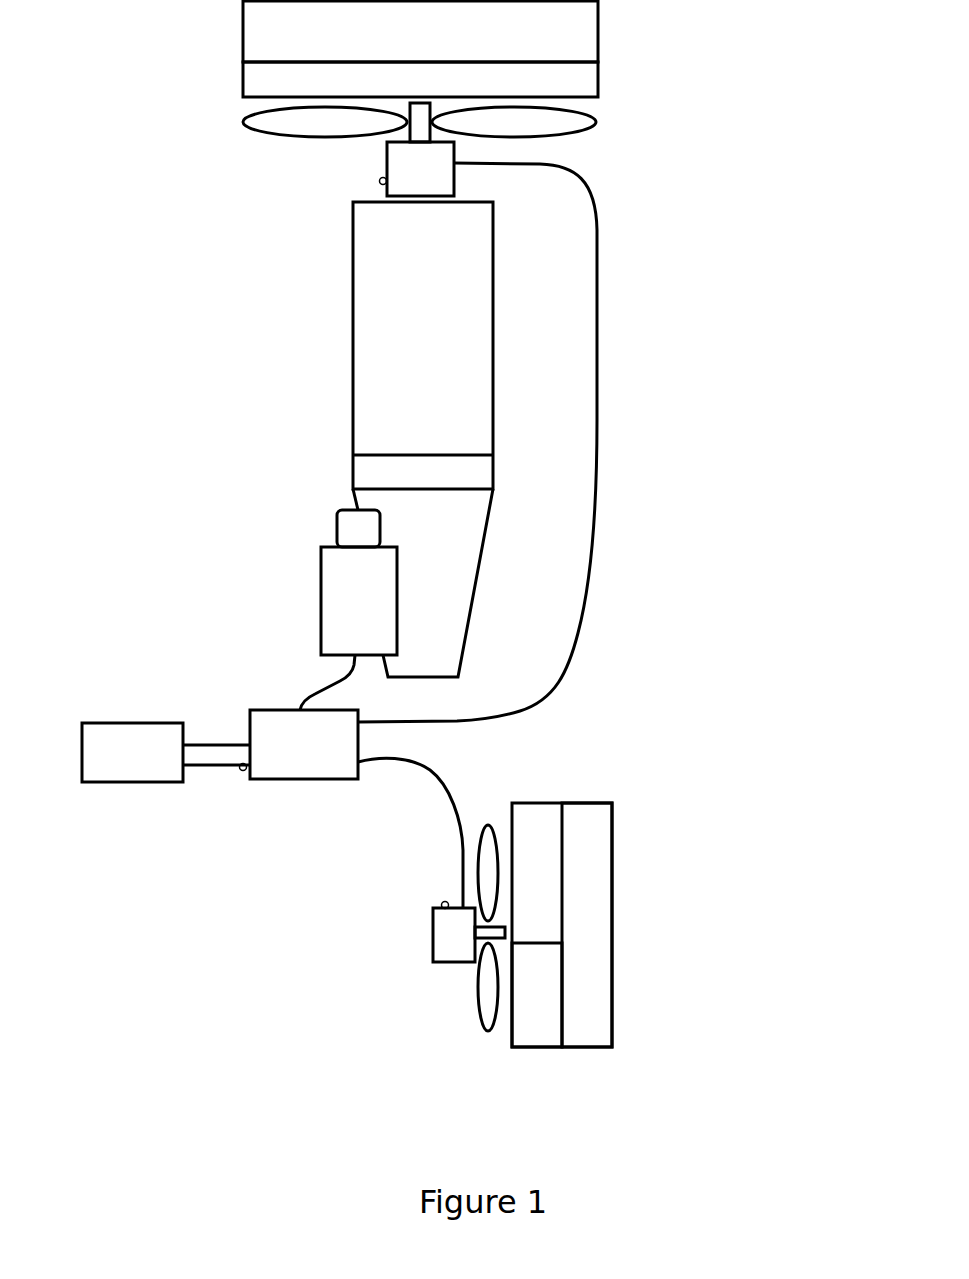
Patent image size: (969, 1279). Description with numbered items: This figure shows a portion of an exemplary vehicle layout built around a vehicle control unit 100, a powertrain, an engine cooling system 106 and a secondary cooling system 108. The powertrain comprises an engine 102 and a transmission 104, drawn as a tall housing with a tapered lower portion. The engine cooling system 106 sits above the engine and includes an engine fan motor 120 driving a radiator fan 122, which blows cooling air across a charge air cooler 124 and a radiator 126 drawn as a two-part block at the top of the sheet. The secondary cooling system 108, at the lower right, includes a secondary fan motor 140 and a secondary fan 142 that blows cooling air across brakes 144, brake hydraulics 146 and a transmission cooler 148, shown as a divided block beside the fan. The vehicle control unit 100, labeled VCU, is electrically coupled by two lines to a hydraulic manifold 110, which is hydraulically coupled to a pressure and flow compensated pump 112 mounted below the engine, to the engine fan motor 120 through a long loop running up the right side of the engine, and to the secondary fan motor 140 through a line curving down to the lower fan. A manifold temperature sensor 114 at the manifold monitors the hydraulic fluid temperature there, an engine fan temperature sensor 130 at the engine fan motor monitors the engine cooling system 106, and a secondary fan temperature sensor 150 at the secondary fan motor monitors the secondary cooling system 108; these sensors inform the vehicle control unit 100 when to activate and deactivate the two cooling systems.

The vehicle control unit 100 is at (135, 722).
The engine 102 is at (350, 302).
The transmission 104 is at (483, 547).
The engine cooling system 106 is at (222, 187).
The secondary cooling system 108 is at (398, 978).
The hydraulic manifold 110 is at (270, 708).
The pressure and flow compensated pump 112 is at (318, 575).
The manifold temperature sensor 114 is at (241, 770).
The engine fan motor 120 is at (385, 150).
The radiator fan 122 is at (568, 137).
The charge air cooler 124 is at (600, 82).
The radiator 126 is at (600, 25).
The engine fan temperature sensor 130 is at (380, 182).
The secondary fan motor 140 is at (432, 938).
The secondary fan 142 is at (477, 1005).
The brakes 144 is at (530, 803).
The brake hydraulics 146 is at (527, 1047).
The transmission cooler 148 is at (612, 917).
The secondary fan temperature sensor 150 is at (441, 903).